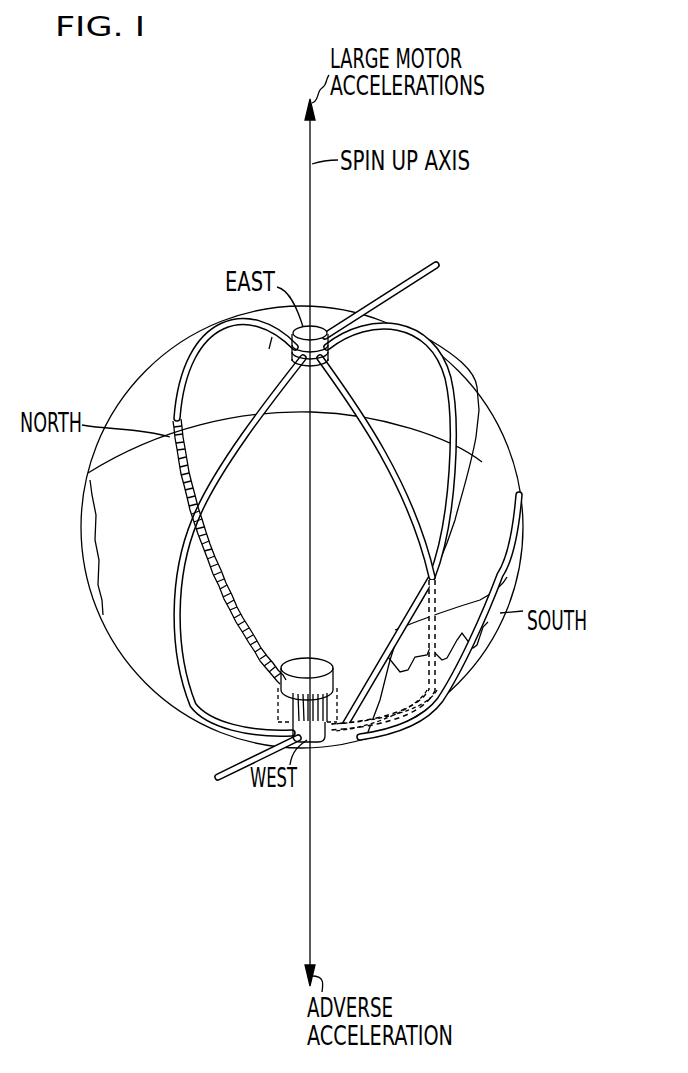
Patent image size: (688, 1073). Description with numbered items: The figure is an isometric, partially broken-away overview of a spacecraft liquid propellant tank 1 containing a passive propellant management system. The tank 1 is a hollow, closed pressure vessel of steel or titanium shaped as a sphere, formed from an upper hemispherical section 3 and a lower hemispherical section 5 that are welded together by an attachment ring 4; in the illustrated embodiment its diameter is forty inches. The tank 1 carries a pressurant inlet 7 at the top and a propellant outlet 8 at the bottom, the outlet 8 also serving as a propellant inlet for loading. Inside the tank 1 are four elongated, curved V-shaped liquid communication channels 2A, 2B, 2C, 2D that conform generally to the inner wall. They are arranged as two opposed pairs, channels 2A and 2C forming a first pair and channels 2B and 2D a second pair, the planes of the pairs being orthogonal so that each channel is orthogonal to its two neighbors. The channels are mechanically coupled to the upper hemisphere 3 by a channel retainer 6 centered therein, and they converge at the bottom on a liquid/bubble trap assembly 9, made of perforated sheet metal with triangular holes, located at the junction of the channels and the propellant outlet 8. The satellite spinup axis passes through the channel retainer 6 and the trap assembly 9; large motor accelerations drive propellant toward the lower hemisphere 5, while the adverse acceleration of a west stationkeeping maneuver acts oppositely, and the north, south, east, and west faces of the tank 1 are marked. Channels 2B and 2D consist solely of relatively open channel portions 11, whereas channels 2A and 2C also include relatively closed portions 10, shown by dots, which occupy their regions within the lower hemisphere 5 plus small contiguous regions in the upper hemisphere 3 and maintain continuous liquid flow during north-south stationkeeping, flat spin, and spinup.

The propellant pressure tank 1 is at (512, 450).
The V-shaped liquid communication channel 2A is at (233, 331).
The V-shaped liquid communication channel 2B is at (406, 343).
The V-shaped liquid communication channel 2C is at (405, 524).
The V-shaped liquid communication channel 2D is at (212, 513).
The upper hemispherical section 3 is at (493, 507).
The attachment ring 4 is at (503, 580).
The lower hemispherical section 5 is at (483, 652).
The channel retainer 6 is at (318, 330).
The pressurant inlet 7 is at (437, 260).
The propellant outlet 8 is at (216, 778).
The liquid/bubble trap assembly 9 is at (323, 738).
The relatively closed portions 10 is at (218, 574).
The relatively open channel portions 11 is at (272, 337).